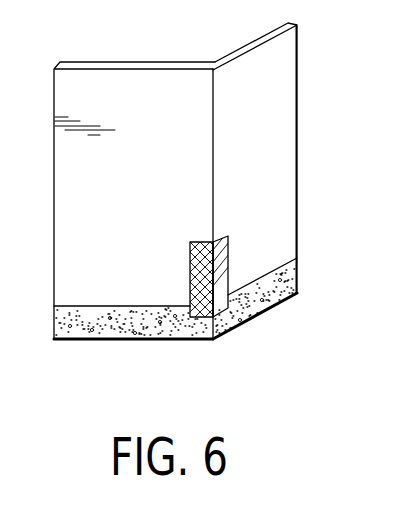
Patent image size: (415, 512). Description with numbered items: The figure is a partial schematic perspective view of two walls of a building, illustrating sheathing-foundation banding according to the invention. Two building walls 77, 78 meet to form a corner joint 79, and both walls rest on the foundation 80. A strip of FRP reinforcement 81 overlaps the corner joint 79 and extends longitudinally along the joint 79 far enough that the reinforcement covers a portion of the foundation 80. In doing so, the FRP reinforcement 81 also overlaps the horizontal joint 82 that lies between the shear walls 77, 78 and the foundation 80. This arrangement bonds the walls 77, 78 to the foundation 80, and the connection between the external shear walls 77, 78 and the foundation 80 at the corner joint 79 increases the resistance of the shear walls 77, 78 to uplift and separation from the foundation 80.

The building wall 77 is at (138, 172).
The building wall 78 is at (255, 158).
The corner joint 79 is at (213, 119).
The foundation 80 is at (298, 275).
The FRP reinforcement 81 is at (190, 268).
The horizontal joint 82 is at (85, 303).